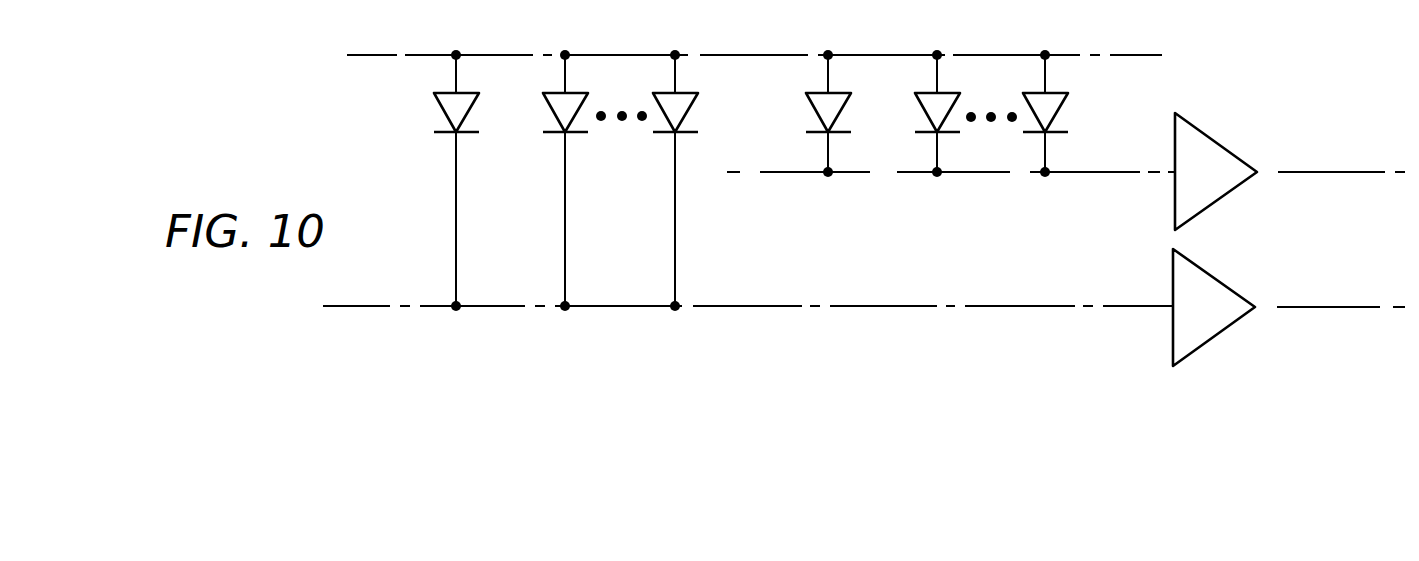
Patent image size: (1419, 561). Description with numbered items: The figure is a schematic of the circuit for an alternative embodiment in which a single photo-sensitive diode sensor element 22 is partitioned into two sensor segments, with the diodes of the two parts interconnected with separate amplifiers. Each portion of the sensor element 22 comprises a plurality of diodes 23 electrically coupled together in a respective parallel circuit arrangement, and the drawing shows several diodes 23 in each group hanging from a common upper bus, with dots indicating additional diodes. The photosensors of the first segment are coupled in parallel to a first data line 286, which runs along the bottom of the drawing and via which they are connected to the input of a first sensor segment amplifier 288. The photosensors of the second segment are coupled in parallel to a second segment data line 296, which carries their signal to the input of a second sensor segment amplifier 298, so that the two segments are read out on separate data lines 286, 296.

The sensor element 22 is at (385, 178).
The photosensors 23 is at (450, 93).
The second segment data line 296 is at (1122, 171).
The first data line 286 is at (1048, 309).
The second sensor segment amplifier 298 is at (1236, 151).
The first sensor segment amplifier 288 is at (1243, 291).